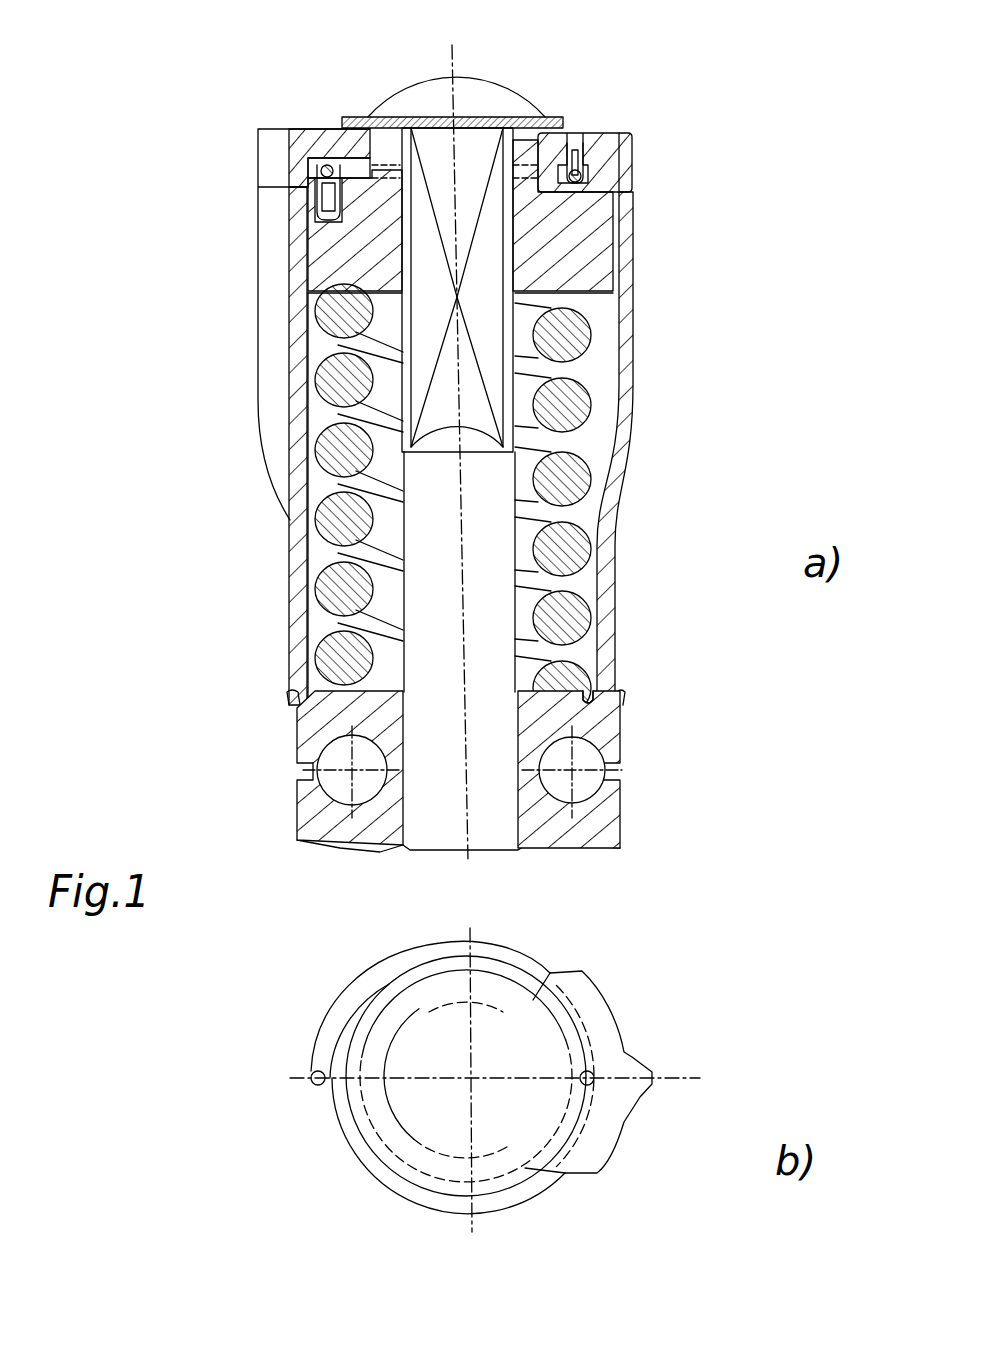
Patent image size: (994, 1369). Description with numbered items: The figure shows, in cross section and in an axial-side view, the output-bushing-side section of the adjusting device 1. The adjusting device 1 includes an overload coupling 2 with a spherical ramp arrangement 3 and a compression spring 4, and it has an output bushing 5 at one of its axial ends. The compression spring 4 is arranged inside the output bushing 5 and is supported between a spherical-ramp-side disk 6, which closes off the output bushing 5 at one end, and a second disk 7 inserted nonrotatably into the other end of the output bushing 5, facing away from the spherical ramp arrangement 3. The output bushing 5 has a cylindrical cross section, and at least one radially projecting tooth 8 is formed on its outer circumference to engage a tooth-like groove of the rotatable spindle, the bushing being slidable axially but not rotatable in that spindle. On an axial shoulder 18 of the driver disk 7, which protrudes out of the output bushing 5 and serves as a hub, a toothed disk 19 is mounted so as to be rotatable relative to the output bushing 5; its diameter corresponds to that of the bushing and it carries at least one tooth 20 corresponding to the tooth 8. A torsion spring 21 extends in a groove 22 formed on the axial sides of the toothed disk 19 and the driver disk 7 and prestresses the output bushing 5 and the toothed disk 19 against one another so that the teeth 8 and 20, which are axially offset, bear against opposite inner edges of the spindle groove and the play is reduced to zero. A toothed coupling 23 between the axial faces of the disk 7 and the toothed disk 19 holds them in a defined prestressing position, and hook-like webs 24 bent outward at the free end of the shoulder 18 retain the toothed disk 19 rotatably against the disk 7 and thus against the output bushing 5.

The adjusting device 1 is at (658, 126).
The overload coupling 2 is at (640, 768).
The spherical ramp arrangement 3 is at (580, 760).
The compression spring 4 is at (593, 538).
The output bushing 5 is at (617, 240).
The spherical-ramp-side disk 6 is at (580, 700).
The second disk 7 is at (587, 270).
The tooth 8 is at (647, 210).
The axial shoulder 18 is at (410, 175).
The toothed disk 19 is at (613, 150).
The tooth 20 is at (645, 155).
The torsion spring 21 is at (322, 222).
The groove 22 is at (320, 197).
The toothed coupling 23 is at (345, 158).
The webs 24 is at (357, 117).